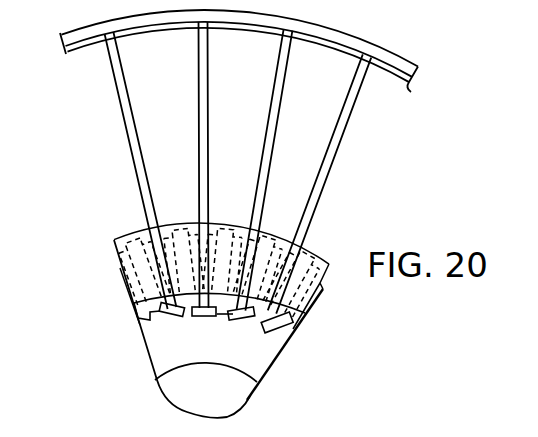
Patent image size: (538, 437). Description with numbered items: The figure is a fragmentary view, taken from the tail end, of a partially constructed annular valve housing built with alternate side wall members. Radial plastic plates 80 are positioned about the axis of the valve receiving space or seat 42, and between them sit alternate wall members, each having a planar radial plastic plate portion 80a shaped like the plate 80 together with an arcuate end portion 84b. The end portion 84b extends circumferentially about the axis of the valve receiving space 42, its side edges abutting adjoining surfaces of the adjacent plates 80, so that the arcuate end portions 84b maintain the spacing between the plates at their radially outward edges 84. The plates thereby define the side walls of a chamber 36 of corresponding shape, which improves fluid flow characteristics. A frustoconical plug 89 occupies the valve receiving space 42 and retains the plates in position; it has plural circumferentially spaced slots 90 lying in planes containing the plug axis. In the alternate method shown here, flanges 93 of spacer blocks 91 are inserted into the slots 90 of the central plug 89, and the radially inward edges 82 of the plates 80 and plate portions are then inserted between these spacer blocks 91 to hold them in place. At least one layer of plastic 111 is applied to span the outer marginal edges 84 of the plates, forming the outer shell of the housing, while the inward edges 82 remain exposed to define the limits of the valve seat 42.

The layer of plastic 111 is at (75, 31).
The radially outer planar edge 84 is at (108, 30).
The arcuate end portion 84b is at (172, 29).
The chamber 36 is at (177, 143).
The plate 80 is at (137, 178).
The planar radial plastic plate portion 80a is at (209, 193).
The radially inward edge 82 is at (224, 313).
The flange 93 is at (251, 310).
The slot 90 is at (295, 328).
The spacer block 91 is at (317, 300).
The frustoconical plug 89 is at (252, 398).
The valve receiving space 42 is at (147, 410).